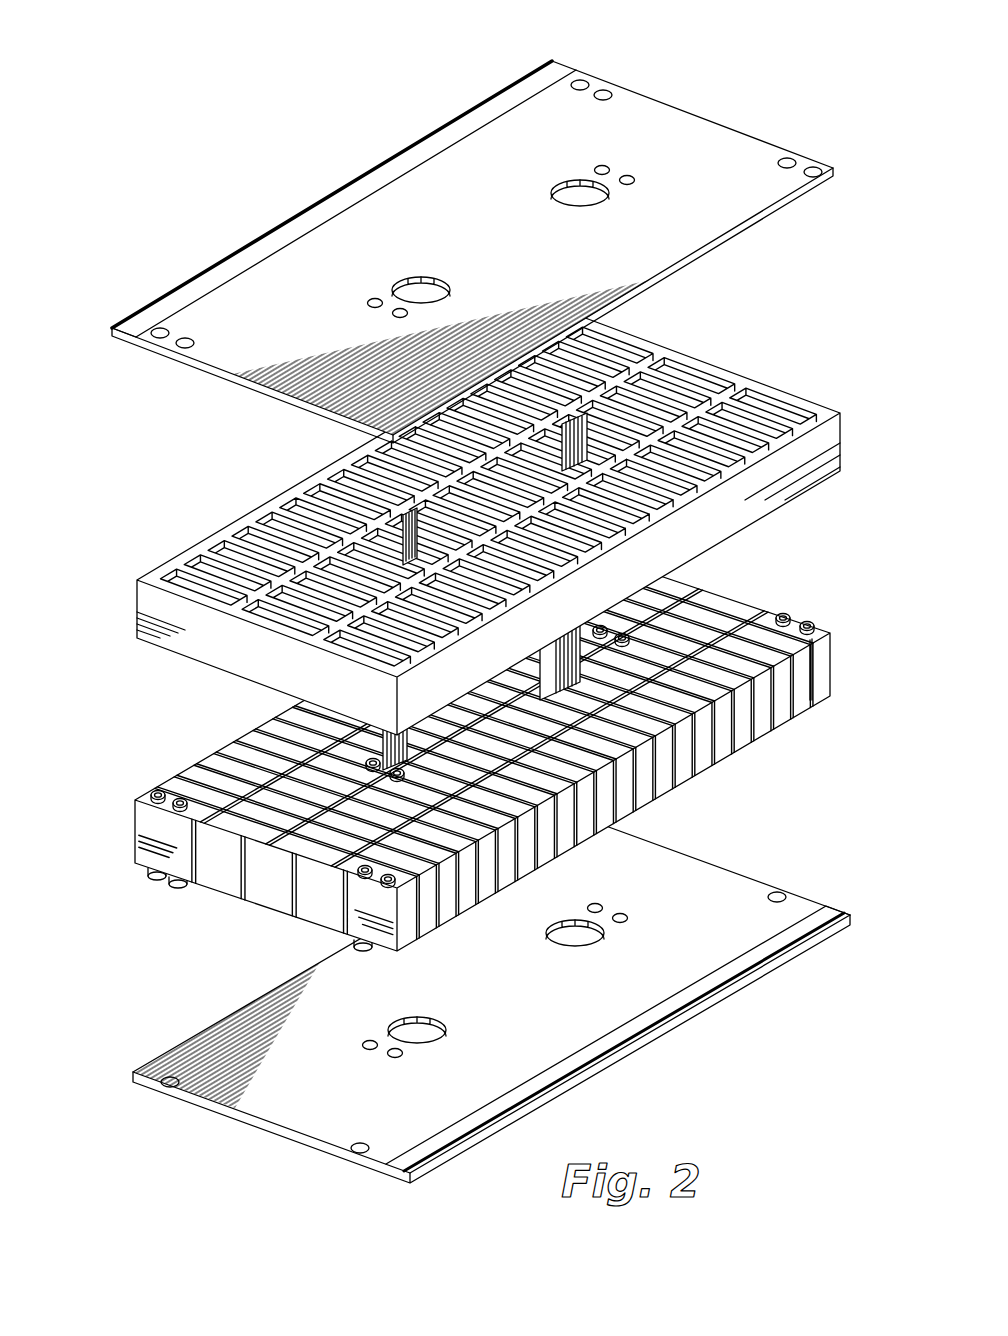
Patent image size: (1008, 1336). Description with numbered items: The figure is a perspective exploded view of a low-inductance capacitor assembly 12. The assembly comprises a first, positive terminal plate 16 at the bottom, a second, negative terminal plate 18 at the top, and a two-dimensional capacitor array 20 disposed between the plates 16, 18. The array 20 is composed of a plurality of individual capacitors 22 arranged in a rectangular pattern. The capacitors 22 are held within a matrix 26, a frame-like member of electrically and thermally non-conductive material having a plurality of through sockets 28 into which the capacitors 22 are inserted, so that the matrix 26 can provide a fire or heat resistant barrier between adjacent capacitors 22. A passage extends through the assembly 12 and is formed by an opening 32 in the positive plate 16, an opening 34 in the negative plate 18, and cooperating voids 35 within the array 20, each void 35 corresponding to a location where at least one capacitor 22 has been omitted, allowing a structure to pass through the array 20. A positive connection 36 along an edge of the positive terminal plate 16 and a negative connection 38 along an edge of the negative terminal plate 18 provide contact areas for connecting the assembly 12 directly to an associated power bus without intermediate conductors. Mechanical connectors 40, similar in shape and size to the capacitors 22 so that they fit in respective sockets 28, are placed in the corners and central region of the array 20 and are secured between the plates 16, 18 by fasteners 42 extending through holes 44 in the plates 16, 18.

The capacitor assembly 12 is at (218, 98).
The first terminal plate 16 is at (492, 998).
The second terminal plate 18 is at (472, 250).
The capacitor array 20 is at (469, 764).
The capacitors 22 is at (804, 693).
The matrix 26 is at (832, 435).
The through sockets 28 is at (800, 420).
The opening 32 is at (440, 1034).
The opening 34 is at (568, 186).
The voids 35 is at (396, 742).
The positive connection 36 is at (730, 962).
The negative connection 38 is at (268, 244).
The mechanical connector 40 is at (137, 845).
The fasteners 42 is at (178, 800).
The holes 44 is at (630, 176).